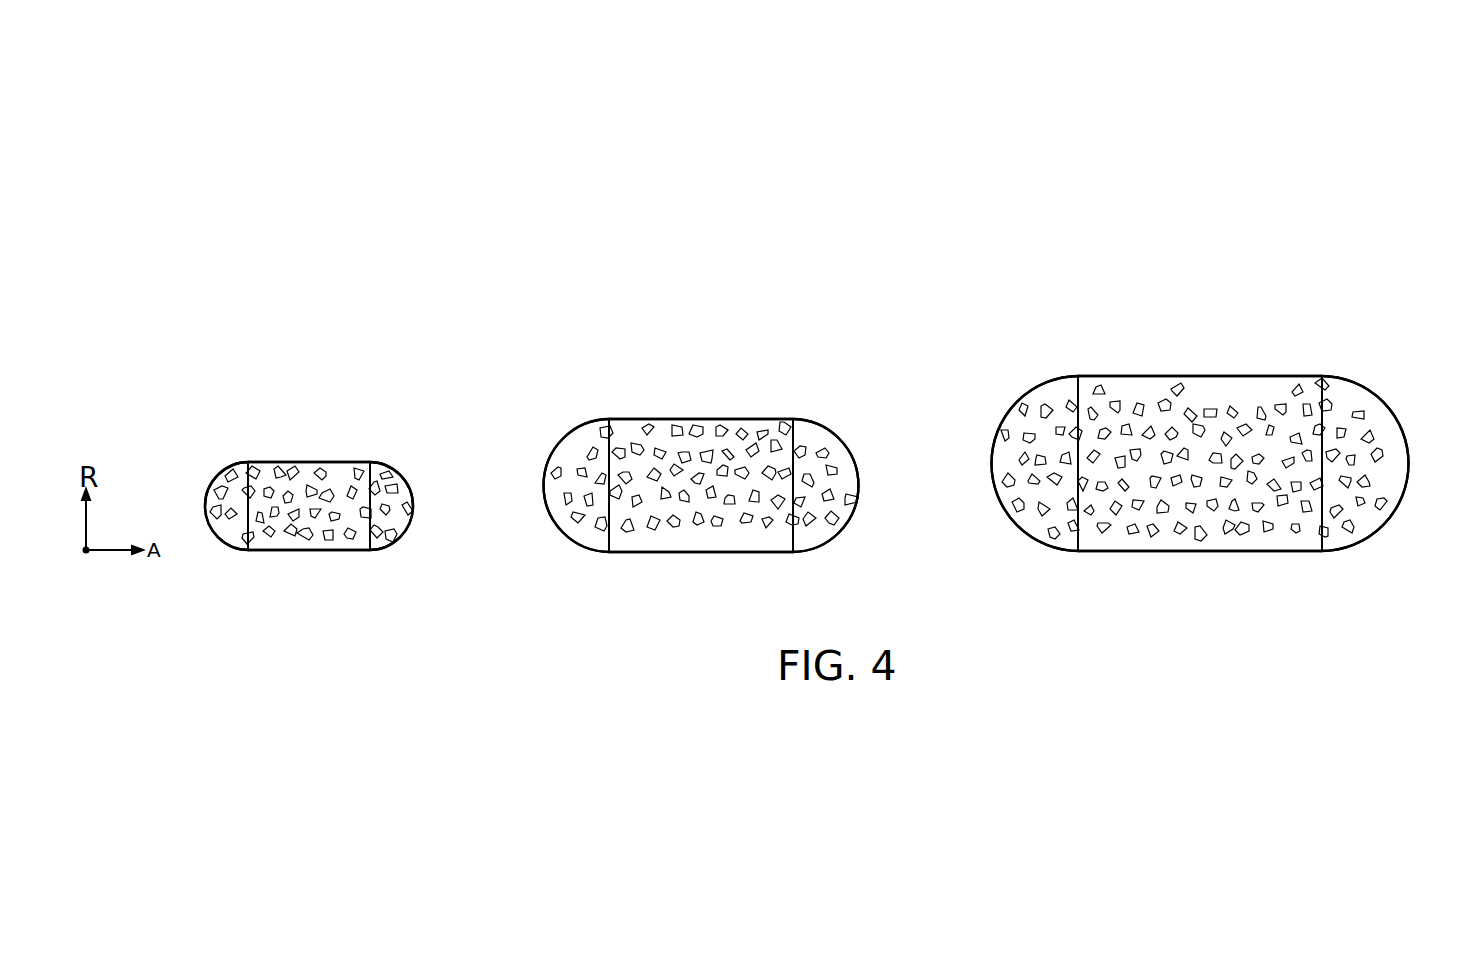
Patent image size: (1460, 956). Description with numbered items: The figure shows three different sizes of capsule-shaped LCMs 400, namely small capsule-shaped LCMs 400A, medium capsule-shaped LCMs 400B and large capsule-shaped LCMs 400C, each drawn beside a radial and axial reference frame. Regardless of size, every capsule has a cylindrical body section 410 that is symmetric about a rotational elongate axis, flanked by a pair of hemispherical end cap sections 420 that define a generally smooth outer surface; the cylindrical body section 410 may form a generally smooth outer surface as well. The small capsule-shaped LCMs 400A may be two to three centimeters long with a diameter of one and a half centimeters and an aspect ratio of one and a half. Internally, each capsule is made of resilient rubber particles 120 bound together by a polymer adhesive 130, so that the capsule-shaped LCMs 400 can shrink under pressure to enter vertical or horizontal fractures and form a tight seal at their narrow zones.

The capsule-shaped LCMs 400 is at (800, 334).
The small capsule-shaped LCMs 400A is at (296, 428).
The medium capsule-shaped LCMs 400B is at (701, 407).
The large capsule-shaped LCMs 400C is at (1200, 385).
The cylindrical body section 410 is at (316, 468).
The hemispherical end cap sections 420 is at (232, 490).
The rubber particles 120 is at (287, 526).
The polymer adhesive 130 is at (322, 548).